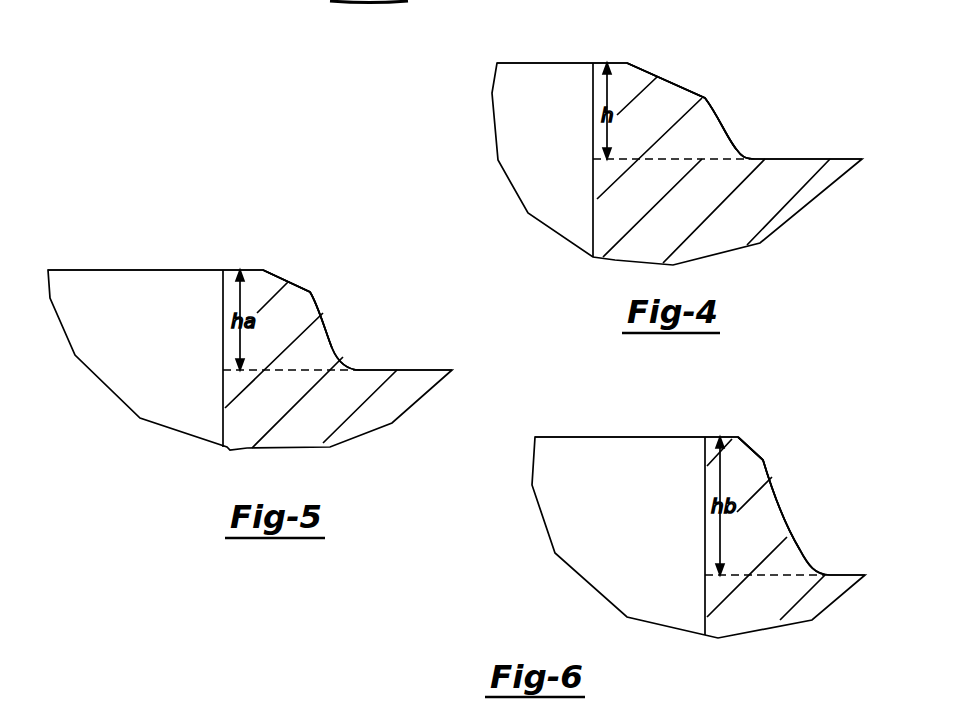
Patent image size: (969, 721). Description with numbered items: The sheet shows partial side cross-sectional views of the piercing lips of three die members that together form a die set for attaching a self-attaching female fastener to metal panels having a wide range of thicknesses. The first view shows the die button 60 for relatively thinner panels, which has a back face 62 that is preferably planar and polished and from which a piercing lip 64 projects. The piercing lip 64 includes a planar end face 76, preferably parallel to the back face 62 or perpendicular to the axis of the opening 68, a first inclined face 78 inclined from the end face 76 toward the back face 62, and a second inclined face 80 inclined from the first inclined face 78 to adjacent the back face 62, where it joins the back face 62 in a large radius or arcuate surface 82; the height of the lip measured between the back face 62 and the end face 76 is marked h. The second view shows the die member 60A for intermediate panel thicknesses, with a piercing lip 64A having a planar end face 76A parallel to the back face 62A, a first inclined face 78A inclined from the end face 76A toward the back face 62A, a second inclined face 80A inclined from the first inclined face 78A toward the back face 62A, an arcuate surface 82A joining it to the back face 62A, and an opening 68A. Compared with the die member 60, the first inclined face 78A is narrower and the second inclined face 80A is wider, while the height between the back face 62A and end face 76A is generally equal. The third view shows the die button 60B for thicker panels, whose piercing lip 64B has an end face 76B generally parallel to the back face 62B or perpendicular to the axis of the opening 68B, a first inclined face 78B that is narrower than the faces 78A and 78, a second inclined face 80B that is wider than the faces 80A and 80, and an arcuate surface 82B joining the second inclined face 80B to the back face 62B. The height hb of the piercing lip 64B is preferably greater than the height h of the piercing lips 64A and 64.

In FIG. 4, the die button 60 is at (477, 100).
In FIG. 4, the back face 62 is at (807, 159).
In FIG. 4, the piercing lip 64 is at (729, 75).
In FIG. 4, the opening 68 is at (593, 127).
In FIG. 4, the planar end face 76 is at (560, 63).
In FIG. 4, the first inclined face 78 is at (658, 77).
In FIG. 4, the second inclined face 80 is at (710, 110).
In FIG. 4, the arcuate surface 82 is at (737, 147).
In FIG. 5, the die member 60A is at (82, 257).
In FIG. 5, the back face 62A is at (428, 370).
In FIG. 5, the piercing lip 64A is at (325, 289).
In FIG. 5, the opening 68A is at (223, 343).
In FIG. 5, the planar end face 76A is at (237, 270).
In FIG. 5, the first inclined face 78A is at (290, 283).
In FIG. 5, the second inclined face 80A is at (320, 318).
In FIG. 5, the arcuate surface 82A is at (340, 363).
In FIG. 6, the die button 60B is at (580, 427).
In FIG. 6, the back face 62B is at (845, 575).
In FIG. 6, the piercing lip 64B is at (782, 457).
In FIG. 6, the opening 68B is at (705, 541).
In FIG. 6, the end face 76B is at (715, 437).
In FIG. 6, the first inclined face 78B is at (755, 450).
In FIG. 6, the second inclined face 80B is at (780, 500).
In FIG. 6, the arcuate surface 82B is at (808, 560).